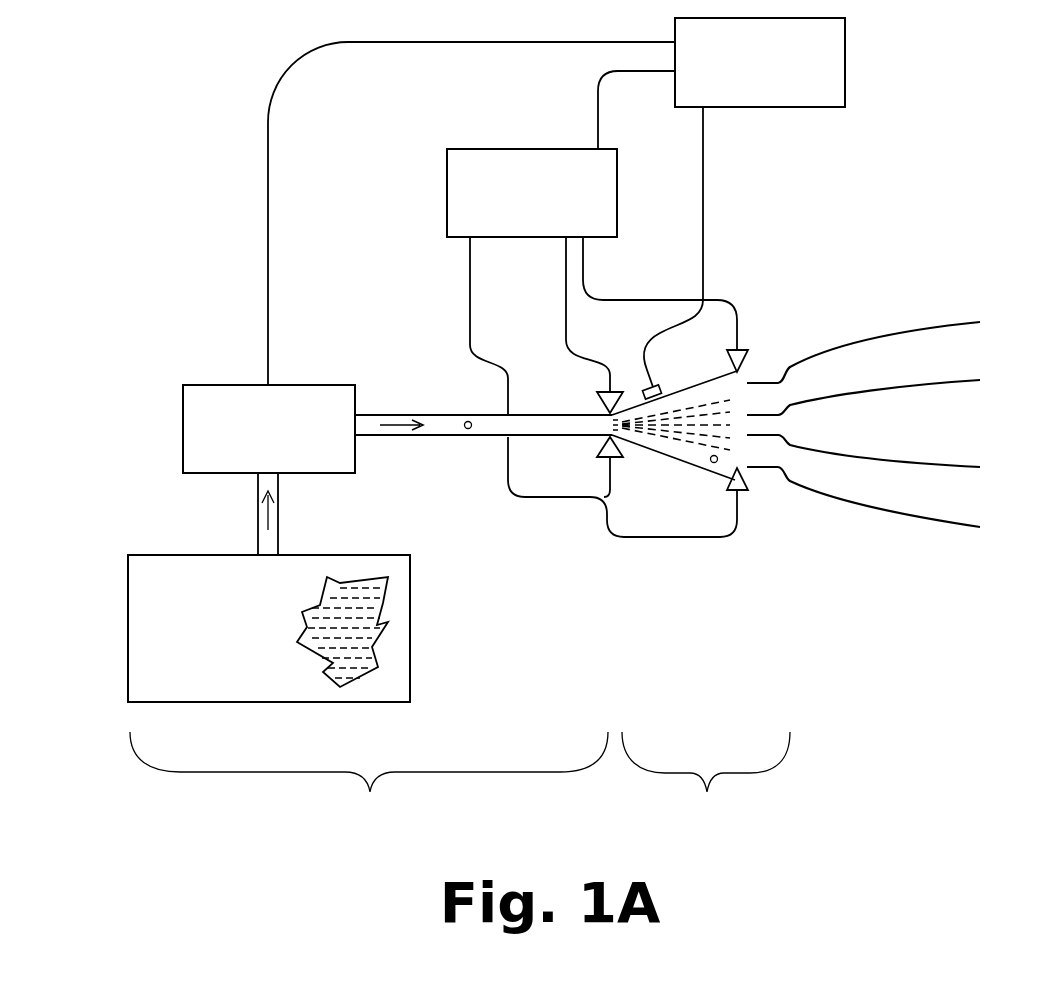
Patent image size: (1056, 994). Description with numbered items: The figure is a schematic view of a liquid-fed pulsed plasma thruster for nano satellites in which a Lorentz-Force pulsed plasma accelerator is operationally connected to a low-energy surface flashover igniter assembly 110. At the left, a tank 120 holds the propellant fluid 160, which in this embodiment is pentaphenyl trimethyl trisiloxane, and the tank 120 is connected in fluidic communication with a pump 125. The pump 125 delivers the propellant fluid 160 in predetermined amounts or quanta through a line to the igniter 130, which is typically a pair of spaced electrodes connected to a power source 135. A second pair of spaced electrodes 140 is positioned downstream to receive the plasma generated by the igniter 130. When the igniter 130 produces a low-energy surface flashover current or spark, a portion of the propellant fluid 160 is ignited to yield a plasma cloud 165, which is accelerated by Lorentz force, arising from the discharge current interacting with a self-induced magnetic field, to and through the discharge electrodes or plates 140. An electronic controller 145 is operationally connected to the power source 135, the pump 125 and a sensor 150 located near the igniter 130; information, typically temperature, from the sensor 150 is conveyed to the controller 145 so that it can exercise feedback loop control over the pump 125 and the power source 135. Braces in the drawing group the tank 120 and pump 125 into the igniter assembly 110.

The low-energy surface flashover igniter assembly 110 is at (369, 780).
The tank 120 is at (254, 616).
The pump 125 is at (254, 461).
The igniter 130 is at (572, 393).
The power source 135 is at (518, 228).
The second pair of spaced electrodes 140 is at (764, 346).
The controller 145 is at (746, 97).
The sensor 150 is at (661, 388).
The propellant fluid 160 is at (392, 618).
The plasma cloud 165 is at (706, 480).